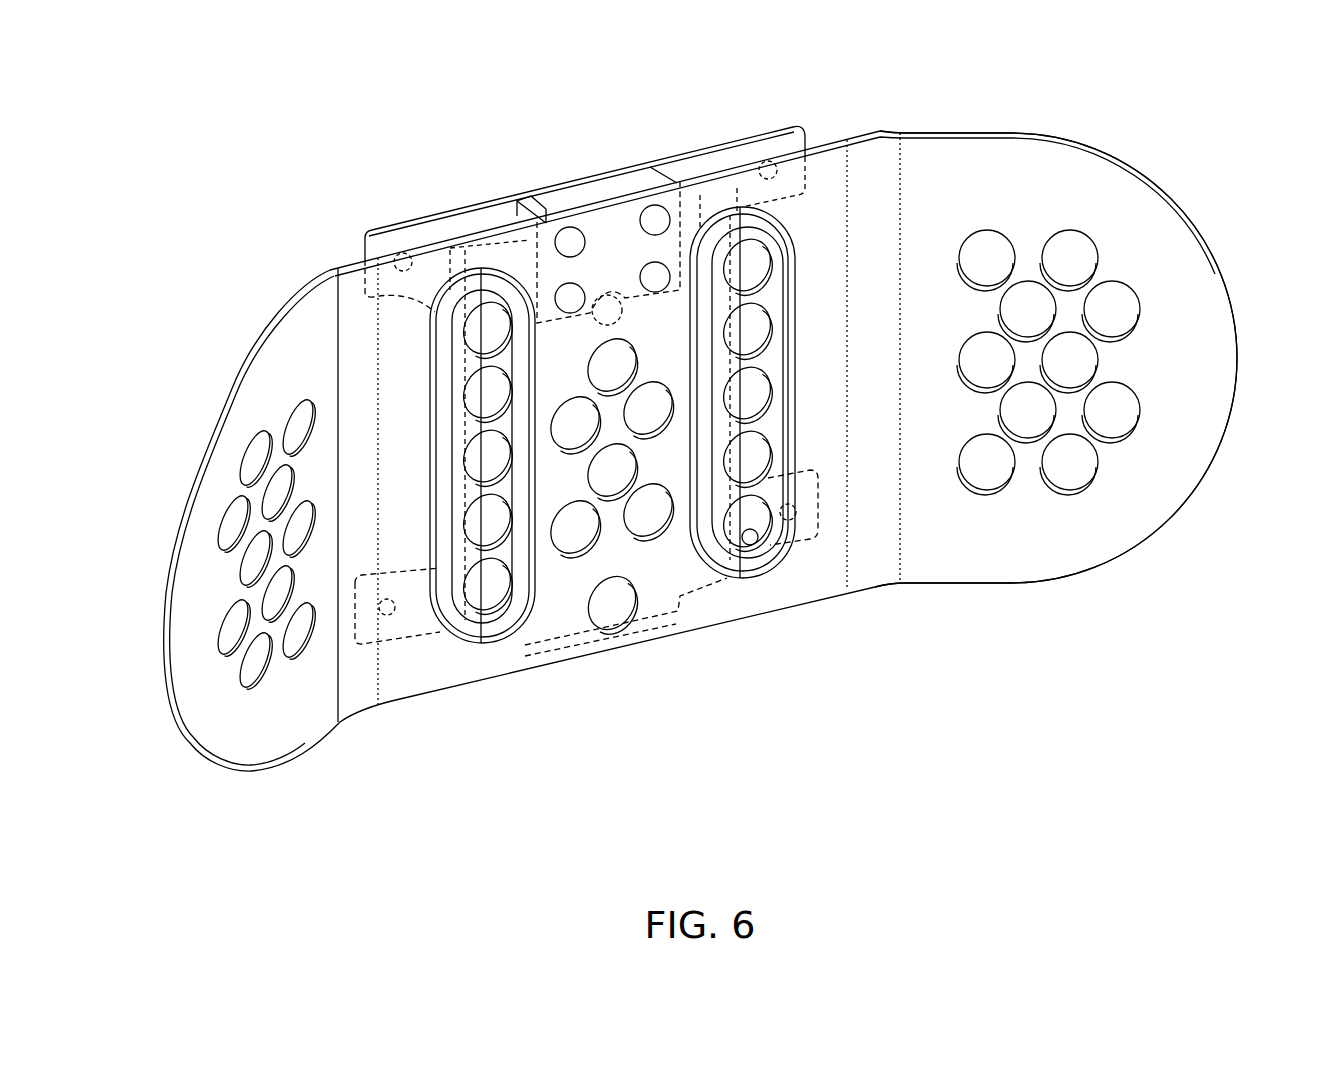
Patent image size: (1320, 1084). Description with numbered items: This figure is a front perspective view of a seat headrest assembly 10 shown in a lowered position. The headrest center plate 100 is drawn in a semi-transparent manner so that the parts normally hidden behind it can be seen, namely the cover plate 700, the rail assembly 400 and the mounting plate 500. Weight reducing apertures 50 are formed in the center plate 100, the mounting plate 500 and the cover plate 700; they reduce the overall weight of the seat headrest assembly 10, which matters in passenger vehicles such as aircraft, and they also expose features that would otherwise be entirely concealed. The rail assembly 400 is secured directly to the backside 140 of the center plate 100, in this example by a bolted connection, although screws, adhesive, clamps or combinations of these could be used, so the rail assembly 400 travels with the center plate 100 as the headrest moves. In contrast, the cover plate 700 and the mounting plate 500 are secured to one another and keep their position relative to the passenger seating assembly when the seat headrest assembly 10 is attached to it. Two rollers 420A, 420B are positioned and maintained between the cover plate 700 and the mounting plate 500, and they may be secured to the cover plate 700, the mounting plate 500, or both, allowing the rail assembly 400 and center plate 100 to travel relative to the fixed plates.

The seat headrest assembly 10 is at (312, 150).
The weight reducing apertures 50 is at (1068, 460).
The headrest center plate 100 is at (400, 418).
The backside 140 is at (826, 143).
The rail assembly 400 is at (602, 192).
The roller 420A is at (499, 238).
The roller 420B is at (692, 193).
The mounting plate 500 is at (425, 233).
The cover plate 700 is at (612, 603).